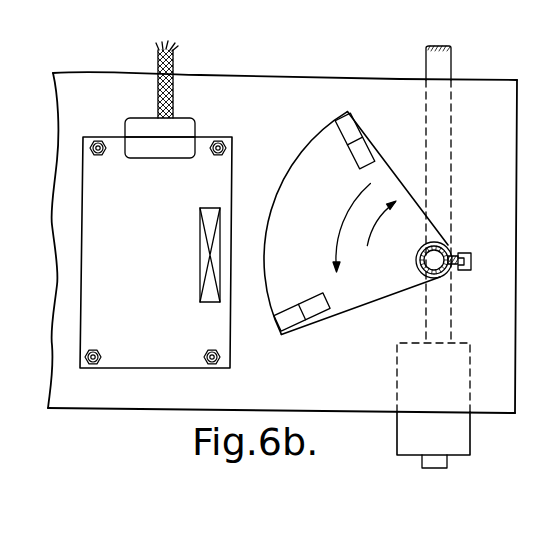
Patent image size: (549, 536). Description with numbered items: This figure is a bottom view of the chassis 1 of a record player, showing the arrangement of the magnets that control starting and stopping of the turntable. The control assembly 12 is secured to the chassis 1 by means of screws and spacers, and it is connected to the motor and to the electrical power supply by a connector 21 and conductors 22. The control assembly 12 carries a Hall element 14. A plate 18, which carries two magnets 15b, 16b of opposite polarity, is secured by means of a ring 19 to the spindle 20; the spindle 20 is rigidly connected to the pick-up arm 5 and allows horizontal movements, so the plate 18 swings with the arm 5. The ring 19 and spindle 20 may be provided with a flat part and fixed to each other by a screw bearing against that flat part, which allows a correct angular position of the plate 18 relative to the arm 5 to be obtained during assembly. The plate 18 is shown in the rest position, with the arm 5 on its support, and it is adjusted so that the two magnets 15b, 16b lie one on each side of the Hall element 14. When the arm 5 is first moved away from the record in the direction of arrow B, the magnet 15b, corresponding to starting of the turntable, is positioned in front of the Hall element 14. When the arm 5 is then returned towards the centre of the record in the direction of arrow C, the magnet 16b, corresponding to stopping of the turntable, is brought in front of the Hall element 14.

The chassis 1 is at (363, 392).
The arm 5 is at (435, 70).
The control assembly 12 is at (174, 355).
The Hall element 14 is at (205, 250).
The magnet 15b is at (303, 312).
The magnet 16b is at (358, 143).
The plate 18 is at (297, 163).
The ring 19 is at (442, 277).
The spindle 20 is at (436, 257).
The connector 21 is at (158, 148).
The conductors 22 is at (174, 74).